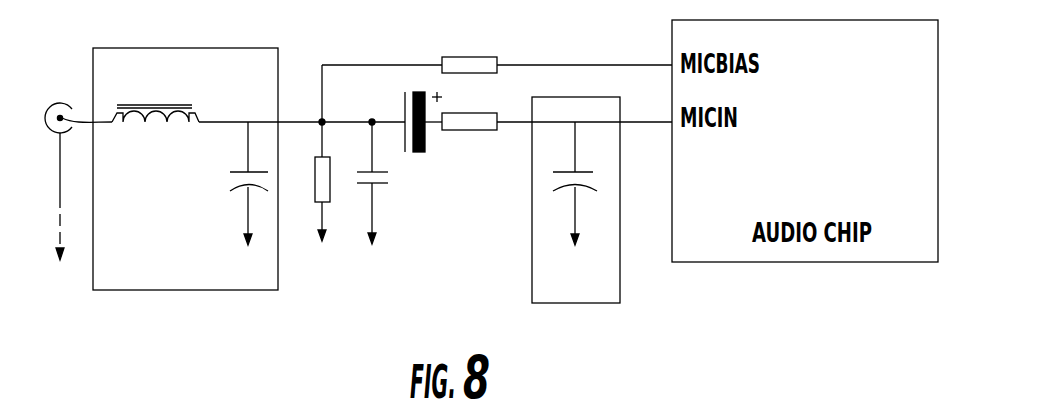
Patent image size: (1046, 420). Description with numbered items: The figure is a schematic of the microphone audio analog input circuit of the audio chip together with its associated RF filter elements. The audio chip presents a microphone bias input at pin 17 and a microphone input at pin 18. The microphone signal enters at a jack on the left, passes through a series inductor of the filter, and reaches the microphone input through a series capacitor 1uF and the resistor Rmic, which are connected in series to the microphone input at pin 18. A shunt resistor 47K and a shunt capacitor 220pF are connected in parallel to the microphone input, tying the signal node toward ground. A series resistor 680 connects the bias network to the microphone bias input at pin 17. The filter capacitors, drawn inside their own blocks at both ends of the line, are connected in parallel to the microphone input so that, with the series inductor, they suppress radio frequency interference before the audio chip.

The MICBIAS pin of audio chip 17 is at (584, 46).
The MICIN pin of audio chip 18 is at (584, 104).
The 47K ohm resistor 47K is at (327, 205).
The 220pF capacitor 220pF is at (405, 183).
The 1uF electrolytic capacitor 1uF is at (422, 135).
The resistor Rmic is at (469, 110).
The 680 ohm resistor 680 is at (412, 50).